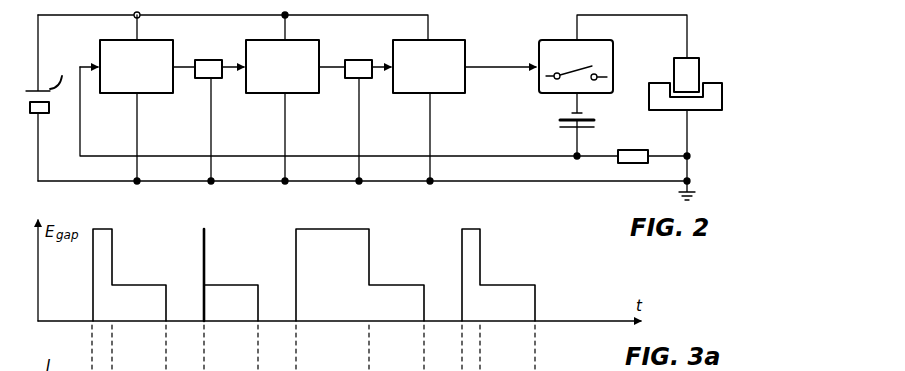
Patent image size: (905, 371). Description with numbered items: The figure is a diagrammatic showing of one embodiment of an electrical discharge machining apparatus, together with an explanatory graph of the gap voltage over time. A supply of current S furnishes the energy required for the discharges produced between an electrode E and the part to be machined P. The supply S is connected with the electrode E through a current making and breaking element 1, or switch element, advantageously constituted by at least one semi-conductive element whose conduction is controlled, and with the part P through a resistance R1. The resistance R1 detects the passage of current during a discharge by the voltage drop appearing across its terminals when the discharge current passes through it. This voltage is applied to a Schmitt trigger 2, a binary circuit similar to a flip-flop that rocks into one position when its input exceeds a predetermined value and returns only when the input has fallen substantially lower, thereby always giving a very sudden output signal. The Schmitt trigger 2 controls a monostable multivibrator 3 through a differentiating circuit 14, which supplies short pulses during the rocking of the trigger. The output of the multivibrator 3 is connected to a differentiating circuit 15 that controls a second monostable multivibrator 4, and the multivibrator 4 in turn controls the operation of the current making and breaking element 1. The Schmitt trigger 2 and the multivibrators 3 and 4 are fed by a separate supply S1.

The current making and breaking element 1 is at (548, 40).
The Schmitt trigger 2 is at (173, 44).
The monostable multivibrator 3 is at (246, 84).
The second multivibrator 4 is at (452, 93).
The differentiating circuit 14 is at (208, 79).
The differentiating circuit 15 is at (352, 79).
The supply S1 is at (44, 98).
The supply of current S is at (563, 120).
The electrode E is at (698, 58).
The part to be machined P is at (700, 110).
The resistance R1 is at (633, 150).